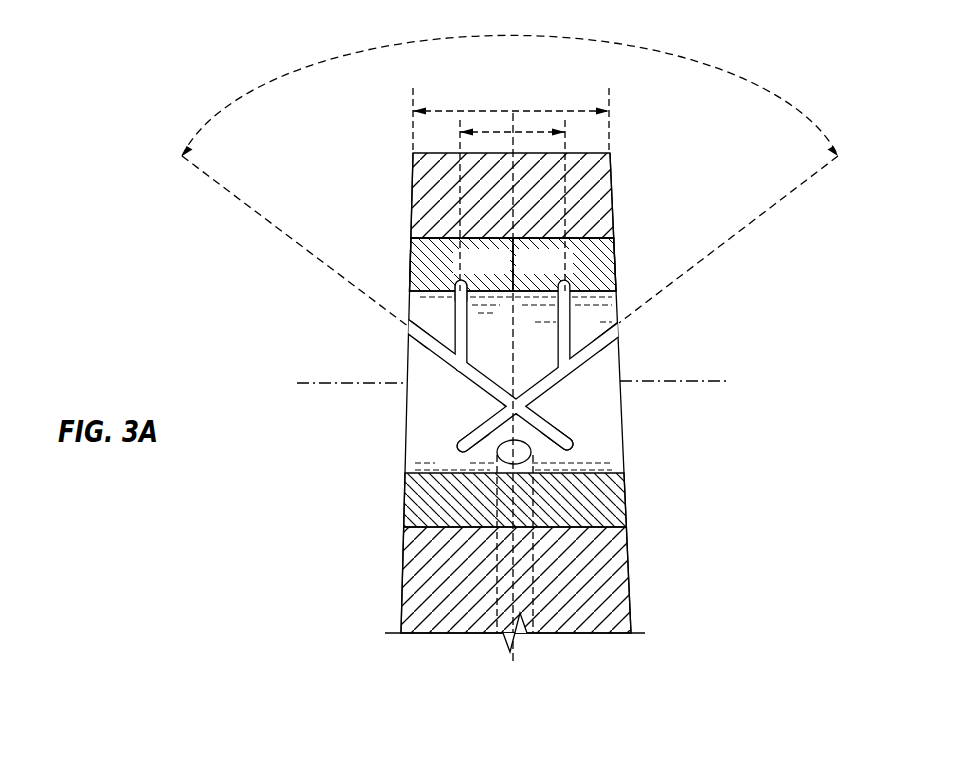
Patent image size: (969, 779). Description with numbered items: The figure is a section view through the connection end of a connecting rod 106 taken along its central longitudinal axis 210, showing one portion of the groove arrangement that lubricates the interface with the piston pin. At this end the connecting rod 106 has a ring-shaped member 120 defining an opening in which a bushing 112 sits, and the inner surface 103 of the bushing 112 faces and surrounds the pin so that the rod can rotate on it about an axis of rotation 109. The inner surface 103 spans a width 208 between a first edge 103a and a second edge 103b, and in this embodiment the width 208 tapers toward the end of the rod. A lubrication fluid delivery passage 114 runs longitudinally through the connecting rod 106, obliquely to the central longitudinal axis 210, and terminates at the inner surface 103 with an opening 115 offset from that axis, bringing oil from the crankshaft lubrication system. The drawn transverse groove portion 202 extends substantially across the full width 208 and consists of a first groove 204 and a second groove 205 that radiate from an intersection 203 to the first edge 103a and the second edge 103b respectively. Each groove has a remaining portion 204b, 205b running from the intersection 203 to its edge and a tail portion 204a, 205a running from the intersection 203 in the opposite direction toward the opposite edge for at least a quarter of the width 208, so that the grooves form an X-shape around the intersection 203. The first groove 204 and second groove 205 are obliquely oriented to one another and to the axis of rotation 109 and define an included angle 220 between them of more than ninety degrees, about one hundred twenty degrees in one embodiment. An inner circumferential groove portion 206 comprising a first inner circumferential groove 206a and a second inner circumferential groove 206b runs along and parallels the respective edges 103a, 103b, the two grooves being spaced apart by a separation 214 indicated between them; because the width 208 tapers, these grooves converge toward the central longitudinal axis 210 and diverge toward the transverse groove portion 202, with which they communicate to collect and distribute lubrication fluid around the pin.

The connecting rod 106 is at (400, 203).
The ring-shaped member 120 is at (614, 193).
The inner surface 103 is at (588, 302).
The first edge 103a is at (410, 264).
The second edge 103b is at (616, 265).
The axis of rotation 109 is at (315, 386).
The bushing 112 is at (625, 506).
The lubrication fluid delivery passage 114 is at (535, 558).
The opening 115 is at (497, 452).
The second transverse groove portion 202 is at (575, 432).
The intersection 203 is at (520, 404).
The first groove 204 is at (428, 380).
The tail portion of first groove 204a is at (560, 452).
The remaining portion of first groove 204b is at (418, 345).
The second groove 205 is at (594, 376).
The tail portion of second groove 205a is at (480, 423).
The remaining portion of second groove 205b is at (602, 347).
The inner circumferential groove portion 206 is at (428, 303).
The first inner circumferential groove 206a is at (468, 300).
The second inner circumferential groove 206b is at (556, 300).
The width 208 is at (489, 110).
The inlet spacing 214 is at (528, 131).
The central longitudinal axis 210 is at (517, 663).
The included angle 220 is at (561, 39).